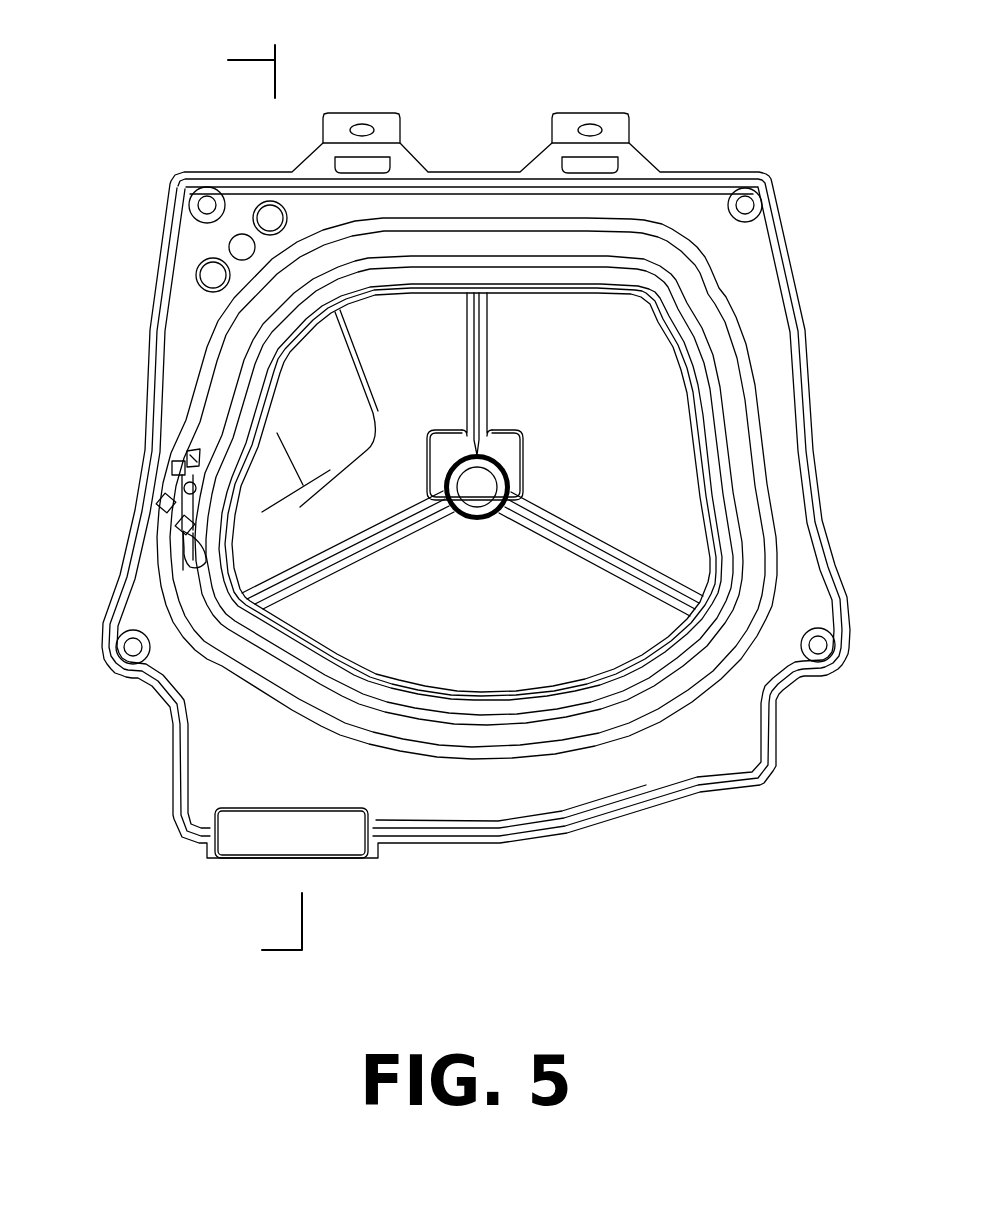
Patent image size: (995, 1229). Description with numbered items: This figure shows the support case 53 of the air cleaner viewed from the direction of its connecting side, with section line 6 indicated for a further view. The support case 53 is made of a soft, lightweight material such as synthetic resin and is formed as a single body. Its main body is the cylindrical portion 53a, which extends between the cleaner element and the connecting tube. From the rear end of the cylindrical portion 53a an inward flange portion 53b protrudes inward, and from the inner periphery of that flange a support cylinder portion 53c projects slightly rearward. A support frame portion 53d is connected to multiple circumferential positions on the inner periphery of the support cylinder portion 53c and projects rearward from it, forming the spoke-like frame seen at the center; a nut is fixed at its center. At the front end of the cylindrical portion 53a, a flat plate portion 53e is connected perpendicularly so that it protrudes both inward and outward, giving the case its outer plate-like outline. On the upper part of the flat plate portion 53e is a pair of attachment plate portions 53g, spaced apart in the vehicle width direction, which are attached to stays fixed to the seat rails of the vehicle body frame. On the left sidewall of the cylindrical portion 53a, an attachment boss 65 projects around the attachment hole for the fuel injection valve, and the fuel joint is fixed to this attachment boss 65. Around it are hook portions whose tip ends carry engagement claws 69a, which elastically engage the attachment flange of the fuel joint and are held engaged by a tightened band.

The support case 53 is at (452, 165).
The cylindrical portion 53a is at (643, 258).
The inward flange portion 53b is at (700, 395).
The support cylinder portion 53c is at (580, 290).
The support frame portion 53d is at (597, 547).
The flat plate portion 53e is at (510, 800).
The attachment plate portions 53g is at (388, 125).
The attachment boss 65 is at (172, 490).
The engagement claws 69a is at (172, 463).
The section line 6 is at (265, 509).